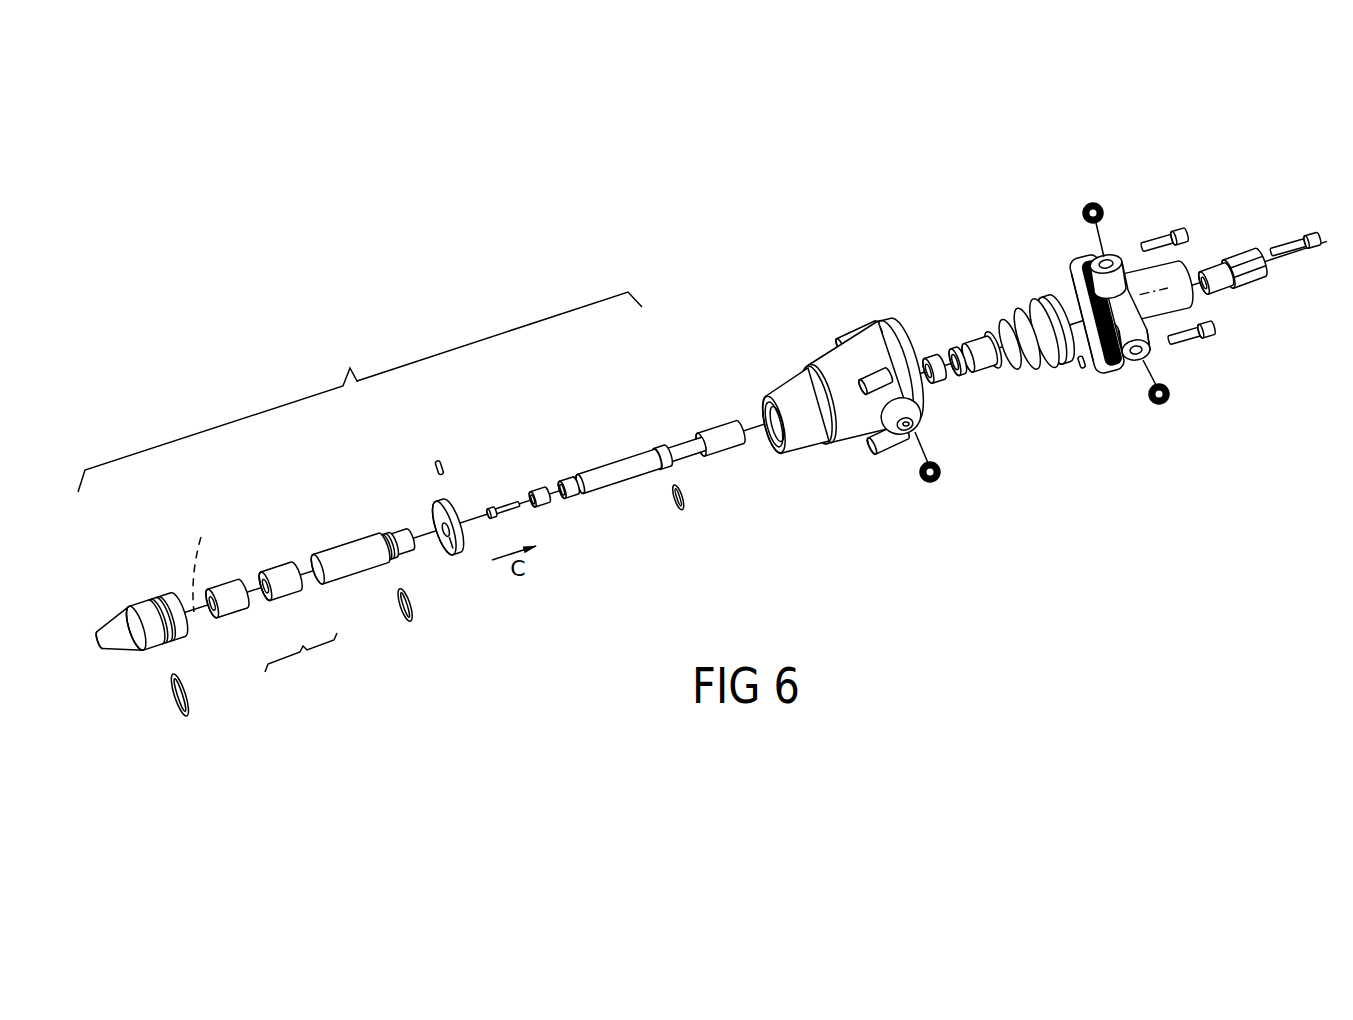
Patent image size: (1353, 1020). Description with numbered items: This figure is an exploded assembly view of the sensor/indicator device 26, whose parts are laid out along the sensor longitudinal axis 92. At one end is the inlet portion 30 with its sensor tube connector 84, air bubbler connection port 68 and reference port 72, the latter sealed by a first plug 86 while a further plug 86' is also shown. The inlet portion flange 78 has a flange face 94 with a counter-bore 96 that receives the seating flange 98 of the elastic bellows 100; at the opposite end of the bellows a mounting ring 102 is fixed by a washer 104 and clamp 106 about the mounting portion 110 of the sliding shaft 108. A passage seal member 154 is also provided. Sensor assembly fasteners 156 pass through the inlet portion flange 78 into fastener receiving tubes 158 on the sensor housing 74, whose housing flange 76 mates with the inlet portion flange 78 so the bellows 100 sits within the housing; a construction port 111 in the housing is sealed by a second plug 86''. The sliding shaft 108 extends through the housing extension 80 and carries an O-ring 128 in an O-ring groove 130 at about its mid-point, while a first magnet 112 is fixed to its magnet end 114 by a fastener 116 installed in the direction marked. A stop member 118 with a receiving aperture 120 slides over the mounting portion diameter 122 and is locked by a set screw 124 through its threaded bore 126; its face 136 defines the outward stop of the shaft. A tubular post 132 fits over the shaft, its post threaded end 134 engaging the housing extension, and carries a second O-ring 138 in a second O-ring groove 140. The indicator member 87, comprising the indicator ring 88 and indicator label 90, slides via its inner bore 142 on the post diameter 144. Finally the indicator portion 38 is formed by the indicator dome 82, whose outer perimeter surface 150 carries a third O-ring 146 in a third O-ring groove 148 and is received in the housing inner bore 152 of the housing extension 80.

The sensor/indicator device 26 is at (670, 288).
The inlet portion 30 is at (1178, 300).
The indicator portion 38 is at (360, 392).
The air bubbler connection port 68 is at (1110, 258).
The reference port 72 is at (1148, 355).
The sensor housing 74 is at (825, 370).
The housing flange 76 is at (880, 322).
The inlet portion flange 78 is at (1071, 258).
The housing extension 80 is at (784, 390).
The indicator dome 82 is at (153, 655).
The sensor tube connector 84 is at (1245, 283).
The first plug 86 is at (1185, 397).
The screw 86' is at (1120, 212).
The second plug 86'' is at (955, 469).
The indicator member 87 is at (301, 661).
The indicator ring 88 is at (283, 600).
The indicator label 90 is at (237, 612).
The sensor longitudinal axis 92 is at (201, 540).
The flange face 94 is at (1074, 292).
The counter-bore 96 is at (1062, 257).
The seating flange 98 is at (1066, 365).
The bellows 100 is at (990, 320).
The mounting ring 102 is at (989, 372).
The washer 104 is at (962, 375).
The clamp 106 is at (933, 355).
The sliding shaft 108 is at (620, 468).
The mounting portion 110 is at (723, 455).
The construction port 111 is at (916, 427).
The first magnet 112 is at (545, 508).
The magnet end 114 is at (560, 478).
The fastener 116 is at (494, 506).
The stop member 118 is at (457, 557).
The receiving aperture 120 is at (440, 555).
The mounting portion diameter 122 is at (587, 417).
The set screw 124 is at (441, 462).
The threaded bore 126 is at (452, 512).
The O-ring 128 is at (681, 510).
The O-ring groove 130 is at (658, 452).
The tubular post 132 is at (343, 546).
The post threaded end 134 is at (431, 566).
The face 136 is at (430, 506).
The second O-ring 138 is at (410, 622).
The second O-ring groove 140 is at (345, 598).
The inner bore 142 is at (263, 565).
The post diameter 144 is at (327, 539).
The third O-ring 146 is at (190, 703).
The third O-ring groove 148 is at (158, 594).
The outer perimeter surface 150 is at (180, 645).
The housing inner bore 152 is at (776, 452).
The passage seal member 154 is at (1085, 368).
The sensor assembly fasteners 156 is at (1207, 335).
The fastener receiving tubes 158 is at (892, 458).